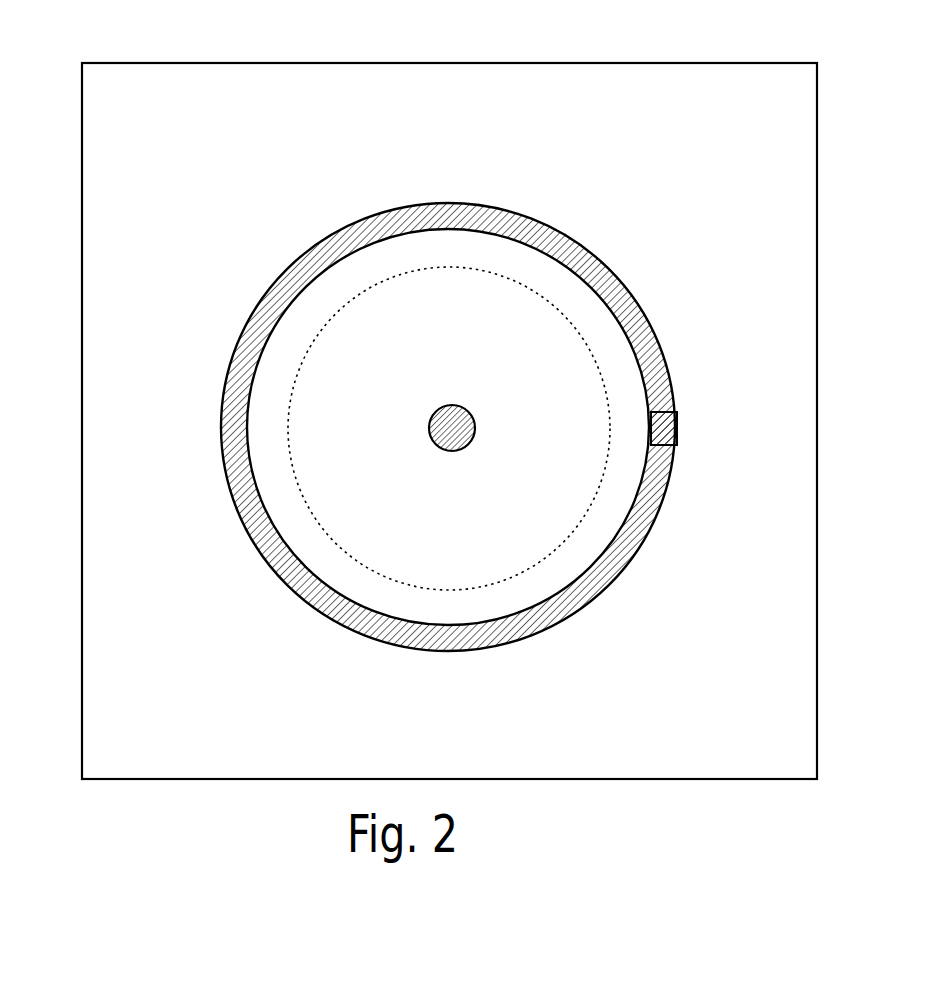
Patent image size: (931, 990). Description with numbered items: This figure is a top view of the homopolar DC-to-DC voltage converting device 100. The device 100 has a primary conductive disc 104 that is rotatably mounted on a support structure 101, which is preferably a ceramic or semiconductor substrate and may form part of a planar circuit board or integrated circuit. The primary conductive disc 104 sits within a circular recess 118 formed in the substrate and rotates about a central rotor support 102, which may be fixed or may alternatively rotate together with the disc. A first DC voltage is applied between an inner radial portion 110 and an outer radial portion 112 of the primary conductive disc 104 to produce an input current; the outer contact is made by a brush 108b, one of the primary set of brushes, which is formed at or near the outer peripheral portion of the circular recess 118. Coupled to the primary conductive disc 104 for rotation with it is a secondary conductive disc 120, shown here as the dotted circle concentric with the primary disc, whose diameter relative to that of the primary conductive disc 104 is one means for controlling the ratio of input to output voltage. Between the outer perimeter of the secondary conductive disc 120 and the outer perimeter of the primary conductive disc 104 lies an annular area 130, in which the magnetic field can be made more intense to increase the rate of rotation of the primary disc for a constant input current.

The device 100 is at (260, 54).
The support structure 101 is at (712, 190).
The rotor support 102 is at (432, 421).
The primary conductive disc 104 is at (466, 334).
The brush 108b is at (746, 450).
The inner radial portion 110 is at (466, 448).
The outer radial portion 112 is at (661, 494).
The circular recess 118 is at (637, 293).
The secondary conductive disc 120 is at (598, 488).
The annular area 130 is at (279, 453).